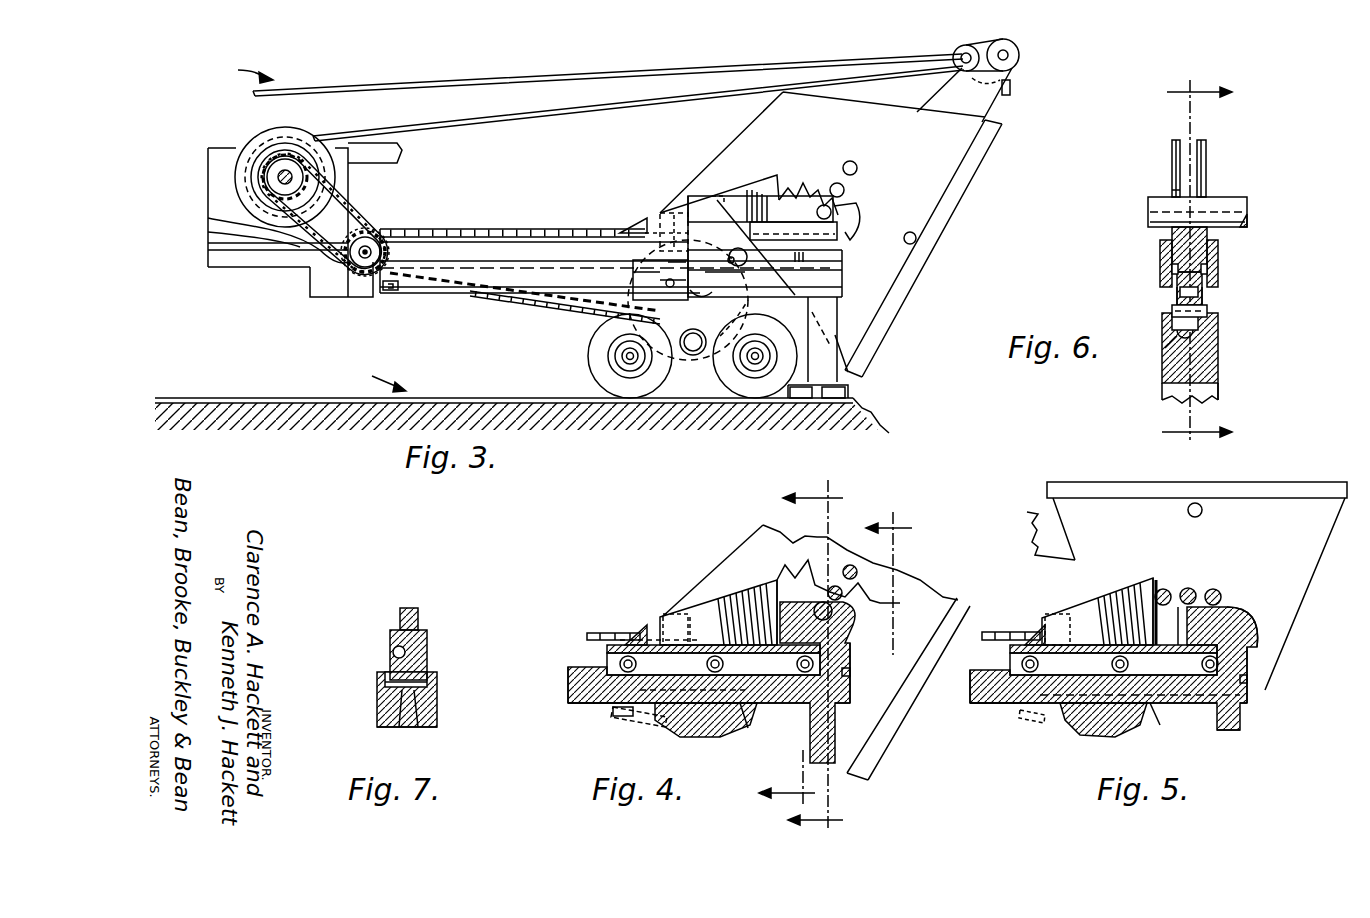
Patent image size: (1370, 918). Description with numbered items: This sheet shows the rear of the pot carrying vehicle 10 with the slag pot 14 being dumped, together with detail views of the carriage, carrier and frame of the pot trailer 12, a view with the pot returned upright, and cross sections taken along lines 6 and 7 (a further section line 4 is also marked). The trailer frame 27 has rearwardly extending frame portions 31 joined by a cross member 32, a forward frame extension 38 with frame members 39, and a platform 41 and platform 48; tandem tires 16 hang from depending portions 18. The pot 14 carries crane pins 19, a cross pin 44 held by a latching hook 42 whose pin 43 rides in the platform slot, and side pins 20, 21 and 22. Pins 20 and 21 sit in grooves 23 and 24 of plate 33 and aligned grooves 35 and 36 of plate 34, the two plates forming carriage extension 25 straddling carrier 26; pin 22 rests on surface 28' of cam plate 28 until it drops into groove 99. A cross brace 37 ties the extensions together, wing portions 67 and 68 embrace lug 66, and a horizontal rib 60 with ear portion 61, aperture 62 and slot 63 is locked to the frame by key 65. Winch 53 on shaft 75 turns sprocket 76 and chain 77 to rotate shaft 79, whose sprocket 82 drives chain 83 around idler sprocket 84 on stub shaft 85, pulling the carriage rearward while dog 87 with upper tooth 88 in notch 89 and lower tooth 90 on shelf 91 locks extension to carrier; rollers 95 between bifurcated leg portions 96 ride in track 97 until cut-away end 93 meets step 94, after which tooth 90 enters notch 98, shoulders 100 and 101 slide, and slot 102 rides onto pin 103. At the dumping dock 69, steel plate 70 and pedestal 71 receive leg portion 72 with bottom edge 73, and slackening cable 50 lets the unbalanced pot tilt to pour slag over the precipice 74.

In FIG. 3, the pot carrying vehicle 10 is at (235, 68).
In FIG. 3, the pot trailer 12 is at (207, 253).
In FIG. 3, the pot 14 is at (898, 108).
In FIG. 4, the pot 14 is at (953, 578).
In FIG. 5, the pot 14 is at (1314, 566).
In FIG. 3, the tires 16 is at (633, 400).
In FIG. 3, the depending portions 18 is at (646, 330).
In FIG. 4, the depending portions 18 is at (735, 730).
In FIG. 5, the depending portions 18 is at (1130, 735).
In FIG. 5, the pins 19 is at (1203, 511).
In FIG. 4, the pin 20 is at (852, 565).
In FIG. 5, the pin 20 is at (1165, 588).
In FIG. 3, the pin 21 is at (836, 183).
In FIG. 4, the pin 21 is at (842, 590).
In FIG. 5, the pin 21 is at (1190, 587).
In FIG. 3, the pin 22 is at (832, 218).
In FIG. 6, the pin 22 is at (1249, 207).
In FIG. 4, the pin 22 is at (823, 602).
In FIG. 5, the pin 22 is at (1215, 588).
In FIG. 3, the groove 23 is at (788, 174).
In FIG. 3, the groove 24 is at (807, 197).
In FIG. 6, the groove 24 is at (1172, 168).
In FIG. 3, the carriage extension 25 is at (697, 205).
In FIG. 4, the carriage extension 25 is at (725, 597).
In FIG. 5, the carriage extension 25 is at (1103, 597).
In FIG. 3, the carrier 26 is at (620, 233).
In FIG. 6, the carrier 26 is at (1204, 291).
In FIG. 7, the carrier 26 is at (428, 652).
In FIG. 4, the carrier 26 is at (852, 655).
In FIG. 5, the carrier 26 is at (1250, 661).
In FIG. 6, the frame 27 is at (1222, 385).
In FIG. 7, the frame 27 is at (378, 718).
In FIG. 4, the frame 27 is at (586, 704).
In FIG. 5, the frame 27 is at (992, 705).
In FIG. 6, the cam plate 28 is at (1230, 266).
In FIG. 4, the cam plate 28 is at (739, 682).
In FIG. 5, the cam plate 28 is at (1153, 666).
In FIG. 5, the surface 28' is at (1254, 599).
In FIG. 3, the frame portion 31 is at (446, 295).
In FIG. 6, the frame portion 31 is at (1220, 362).
In FIG. 7, the frame portion 31 is at (438, 705).
In FIG. 4, the frame portion 31 is at (568, 685).
In FIG. 5, the frame portion 31 is at (970, 690).
In FIG. 3, the cross member 32 is at (326, 298).
In FIG. 3, the plate 33 is at (717, 205).
In FIG. 6, the plate 33 is at (1172, 190).
In FIG. 6, the plate 34 is at (1206, 187).
In FIG. 4, the plate 34 is at (692, 608).
In FIG. 4, the groove 35 is at (777, 580).
In FIG. 5, the groove 35 is at (1150, 585).
In FIG. 6, the groove 36 is at (1208, 168).
In FIG. 4, the groove 36 is at (808, 560).
In FIG. 5, the groove 36 is at (1155, 610).
In FIG. 4, the cross brace 37 is at (672, 612).
In FIG. 5, the cross brace 37 is at (1065, 612).
In FIG. 3, the frame extension 38 is at (228, 268).
In FIG. 3, the frame member 39 is at (285, 268).
In FIG. 3, the platform 41 is at (404, 158).
In FIG. 3, the latching hook 42 is at (1015, 70).
In FIG. 3, the pin 43 is at (1012, 92).
In FIG. 3, the cross pin 44 is at (1020, 55).
In FIG. 3, the platform 48 is at (222, 148).
In FIG. 3, the cable 50 is at (486, 111).
In FIG. 3, the winch 53 is at (274, 132).
In FIG. 3, the horizontal rib 60 is at (765, 273).
In FIG. 6, the horizontal rib 60 is at (1160, 243).
In FIG. 3, the ear portion 61 is at (657, 230).
In FIG. 3, the aperture 62 is at (631, 262).
In FIG. 3, the slot 63 is at (631, 285).
In FIG. 3, the key 65 is at (390, 292).
In FIG. 3, the lug 66 is at (640, 227).
In FIG. 4, the lug 66 is at (640, 636).
In FIG. 5, the lug 66 is at (1025, 632).
In FIG. 3, the wing portion 67 is at (660, 226).
In FIG. 4, the wing portion 68 is at (640, 624).
In FIG. 5, the wing portion 68 is at (1044, 624).
In FIG. 3, the dumping dock 69 is at (373, 377).
In FIG. 3, the steel plate 70 is at (852, 161).
In FIG. 3, the supporting pedestal 71 is at (850, 393).
In FIG. 3, the leg portion 72 is at (893, 306).
In FIG. 4, the leg portion 72 is at (868, 760).
In FIG. 5, the leg portion 72 is at (1243, 729).
In FIG. 3, the bottom edge 73 is at (852, 381).
In FIG. 3, the precipice 74 is at (890, 430).
In FIG. 3, the shaft 75 is at (278, 182).
In FIG. 3, the sprocket 76 is at (262, 170).
In FIG. 3, the chain 77 is at (348, 222).
In FIG. 3, the shaft 79 is at (390, 255).
In FIG. 3, the sprocket 82 is at (374, 236).
In FIG. 3, the chain 83 is at (560, 313).
In FIG. 4, the chain 83 is at (600, 633).
In FIG. 3, the sprocket 84 is at (730, 334).
In FIG. 4, the sprocket 84 is at (628, 720).
In FIG. 5, the sprocket 84 is at (1032, 723).
In FIG. 3, the stub shaft 85 is at (722, 273).
In FIG. 3, the dog 87 is at (746, 204).
In FIG. 3, the upper tooth 88 is at (748, 257).
In FIG. 3, the notch 89 is at (760, 228).
In FIG. 3, the lower tooth 90 is at (727, 259).
In FIG. 3, the shelf 91 is at (505, 260).
In FIG. 6, the shelf 91 is at (1172, 311).
In FIG. 7, the shelf 91 is at (385, 683).
In FIG. 7, the cut-away end 93 is at (399, 729).
In FIG. 4, the cut-away end 93 is at (852, 672).
In FIG. 5, the cut-away end 93 is at (1250, 678).
In FIG. 3, the step 94 is at (845, 264).
In FIG. 7, the step 94 is at (418, 729).
In FIG. 4, the step 94 is at (852, 691).
In FIG. 5, the step 94 is at (1248, 697).
In FIG. 6, the rollers 95 is at (1220, 345).
In FIG. 4, the rollers 95 is at (619, 664).
In FIG. 5, the rollers 95 is at (1020, 664).
In FIG. 6, the bifurcated leg portions 96 is at (1179, 294).
In FIG. 4, the bifurcated leg portions 96 is at (749, 706).
In FIG. 5, the bifurcated leg portions 96 is at (1160, 706).
In FIG. 3, the track 97 is at (544, 267).
In FIG. 6, the track 97 is at (1166, 352).
In FIG. 7, the track 97 is at (392, 652).
In FIG. 4, the track 97 is at (607, 649).
In FIG. 5, the track 97 is at (1010, 649).
In FIG. 3, the notch 98 is at (770, 265).
In FIG. 3, the groove 99 is at (858, 208).
In FIG. 6, the shoulder 100 is at (1172, 269).
In FIG. 6, the shoulder 101 is at (1208, 268).
In FIG. 3, the slot 102 is at (704, 296).
In FIG. 3, the pin 103 is at (672, 255).
In FIG. 6, the section line 4- 4 is at (1196, 264).
In FIG. 4, the section line 6- 6 is at (803, 652).
In FIG. 4, the section line 7- 7 is at (851, 671).